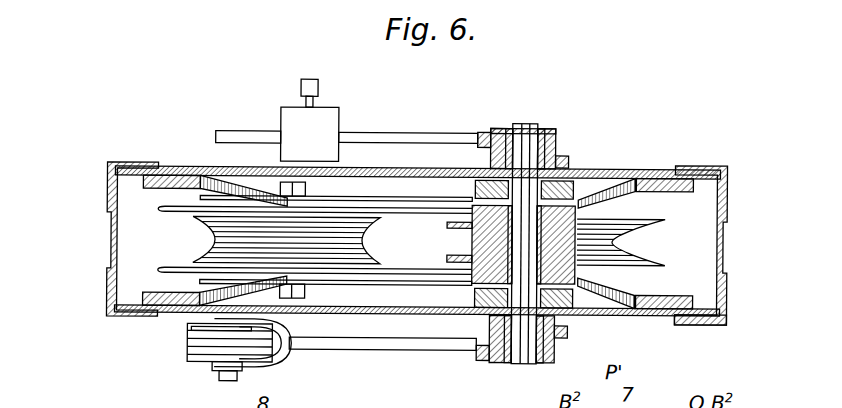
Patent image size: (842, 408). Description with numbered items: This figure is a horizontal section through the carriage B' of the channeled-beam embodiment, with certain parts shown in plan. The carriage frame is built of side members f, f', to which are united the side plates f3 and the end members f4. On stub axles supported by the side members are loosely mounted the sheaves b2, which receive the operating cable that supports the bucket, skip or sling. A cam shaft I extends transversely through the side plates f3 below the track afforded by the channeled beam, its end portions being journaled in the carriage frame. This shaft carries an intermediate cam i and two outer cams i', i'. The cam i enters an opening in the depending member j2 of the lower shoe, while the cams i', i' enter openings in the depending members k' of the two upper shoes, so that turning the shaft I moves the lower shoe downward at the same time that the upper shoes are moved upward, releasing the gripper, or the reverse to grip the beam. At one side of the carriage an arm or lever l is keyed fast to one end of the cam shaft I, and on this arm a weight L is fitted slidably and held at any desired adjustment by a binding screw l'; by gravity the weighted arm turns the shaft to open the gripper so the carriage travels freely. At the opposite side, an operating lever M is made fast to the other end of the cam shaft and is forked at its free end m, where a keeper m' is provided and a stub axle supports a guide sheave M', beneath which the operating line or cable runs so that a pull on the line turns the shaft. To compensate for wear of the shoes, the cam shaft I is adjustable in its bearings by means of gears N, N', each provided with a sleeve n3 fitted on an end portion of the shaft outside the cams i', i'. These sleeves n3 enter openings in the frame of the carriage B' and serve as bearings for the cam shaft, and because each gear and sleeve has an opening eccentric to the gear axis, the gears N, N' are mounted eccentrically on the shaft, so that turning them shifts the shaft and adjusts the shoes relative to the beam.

The end members f4 is at (106, 236).
The side plates f3 is at (372, 168).
The side member f is at (418, 242).
The side member f' is at (315, 231).
The sheaves b2 is at (200, 228).
The cam i is at (498, 244).
The depending member j2 is at (470, 244).
The cam shaft I is at (516, 125).
The cams i' is at (514, 248).
The depending members k' is at (526, 217).
The gear N is at (530, 245).
The gear N' is at (542, 121).
The sleeves n3 is at (505, 128).
The weight L is at (334, 117).
The binding screw l' is at (283, 83).
The arm or lever l is at (347, 118).
The operating lever M is at (382, 363).
The forked end m is at (269, 353).
The guide sheave M' is at (197, 352).
The keeper m' is at (175, 331).
The carriage B' is at (682, 331).